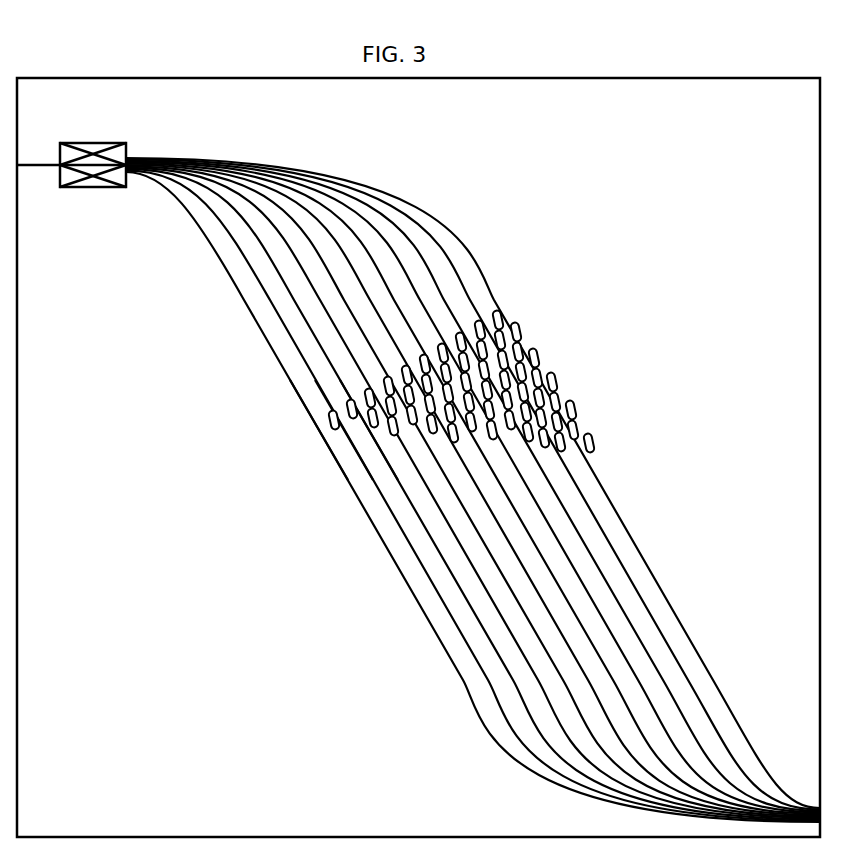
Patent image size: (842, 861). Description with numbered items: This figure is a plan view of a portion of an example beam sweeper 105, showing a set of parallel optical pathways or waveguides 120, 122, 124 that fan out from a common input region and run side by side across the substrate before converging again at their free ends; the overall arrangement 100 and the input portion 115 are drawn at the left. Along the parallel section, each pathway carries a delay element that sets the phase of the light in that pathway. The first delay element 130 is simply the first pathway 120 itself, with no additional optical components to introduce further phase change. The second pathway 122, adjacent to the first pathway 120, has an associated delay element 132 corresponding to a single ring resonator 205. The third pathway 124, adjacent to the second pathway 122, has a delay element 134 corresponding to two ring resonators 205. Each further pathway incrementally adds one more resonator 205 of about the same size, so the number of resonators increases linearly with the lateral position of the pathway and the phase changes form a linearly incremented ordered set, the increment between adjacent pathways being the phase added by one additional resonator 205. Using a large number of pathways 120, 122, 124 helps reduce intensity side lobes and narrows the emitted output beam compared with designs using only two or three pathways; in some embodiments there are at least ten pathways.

The optical device 100 is at (178, 74).
The beam sweeper 105 is at (604, 345).
The input coupler / splitter 115 is at (84, 142).
The first pathway 120 is at (213, 244).
The second pathway 122 is at (256, 278).
The third pathway 124 is at (293, 300).
The first delay element 130 is at (312, 437).
The second delay element 132 is at (340, 445).
The third delay element 134 is at (366, 445).
The ring resonator 205 is at (350, 402).